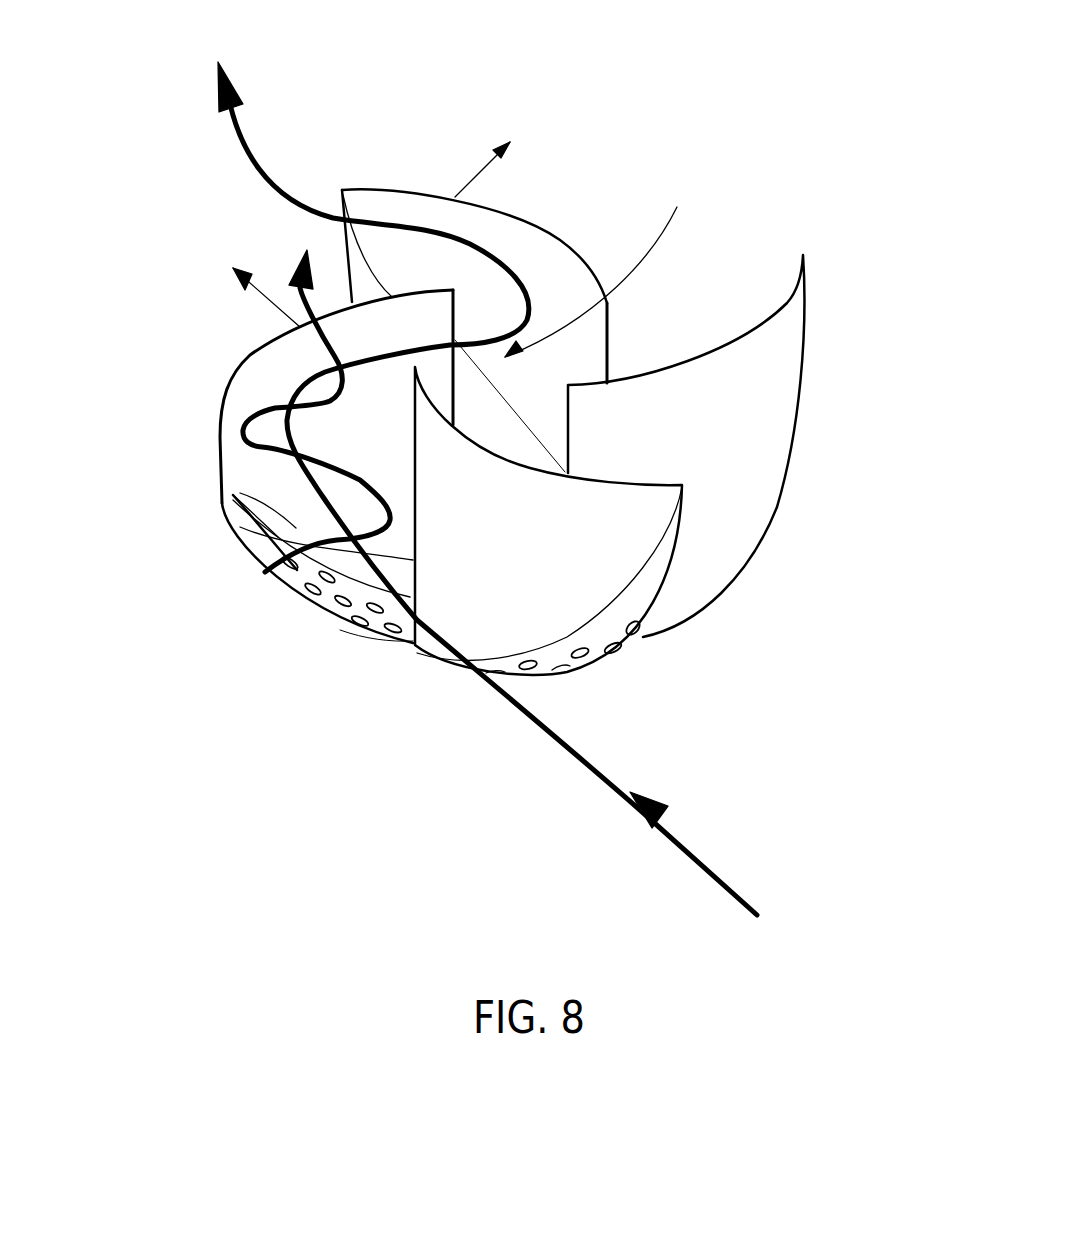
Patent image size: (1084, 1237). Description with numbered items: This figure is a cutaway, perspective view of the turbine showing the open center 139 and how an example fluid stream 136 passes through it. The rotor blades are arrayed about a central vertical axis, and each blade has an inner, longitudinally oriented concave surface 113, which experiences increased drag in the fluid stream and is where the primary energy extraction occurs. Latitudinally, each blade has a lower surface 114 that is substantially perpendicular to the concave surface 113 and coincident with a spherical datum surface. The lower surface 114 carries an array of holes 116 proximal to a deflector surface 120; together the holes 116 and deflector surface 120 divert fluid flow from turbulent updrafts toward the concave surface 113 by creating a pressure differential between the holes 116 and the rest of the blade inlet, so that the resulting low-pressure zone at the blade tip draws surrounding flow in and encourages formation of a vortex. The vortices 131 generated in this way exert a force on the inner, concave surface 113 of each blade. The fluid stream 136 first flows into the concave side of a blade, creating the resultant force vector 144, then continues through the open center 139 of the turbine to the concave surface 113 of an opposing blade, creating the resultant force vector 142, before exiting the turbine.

The concave inner surface 113 is at (578, 287).
The lower surface 114 is at (647, 598).
The holes 116 is at (343, 612).
The deflector surface 120 is at (320, 553).
The vortices 131 is at (290, 449).
The fluid stream 136 is at (257, 158).
The open center 139 is at (603, 268).
The resultant force vector 142 is at (468, 177).
The resultant force vector 144 is at (277, 308).